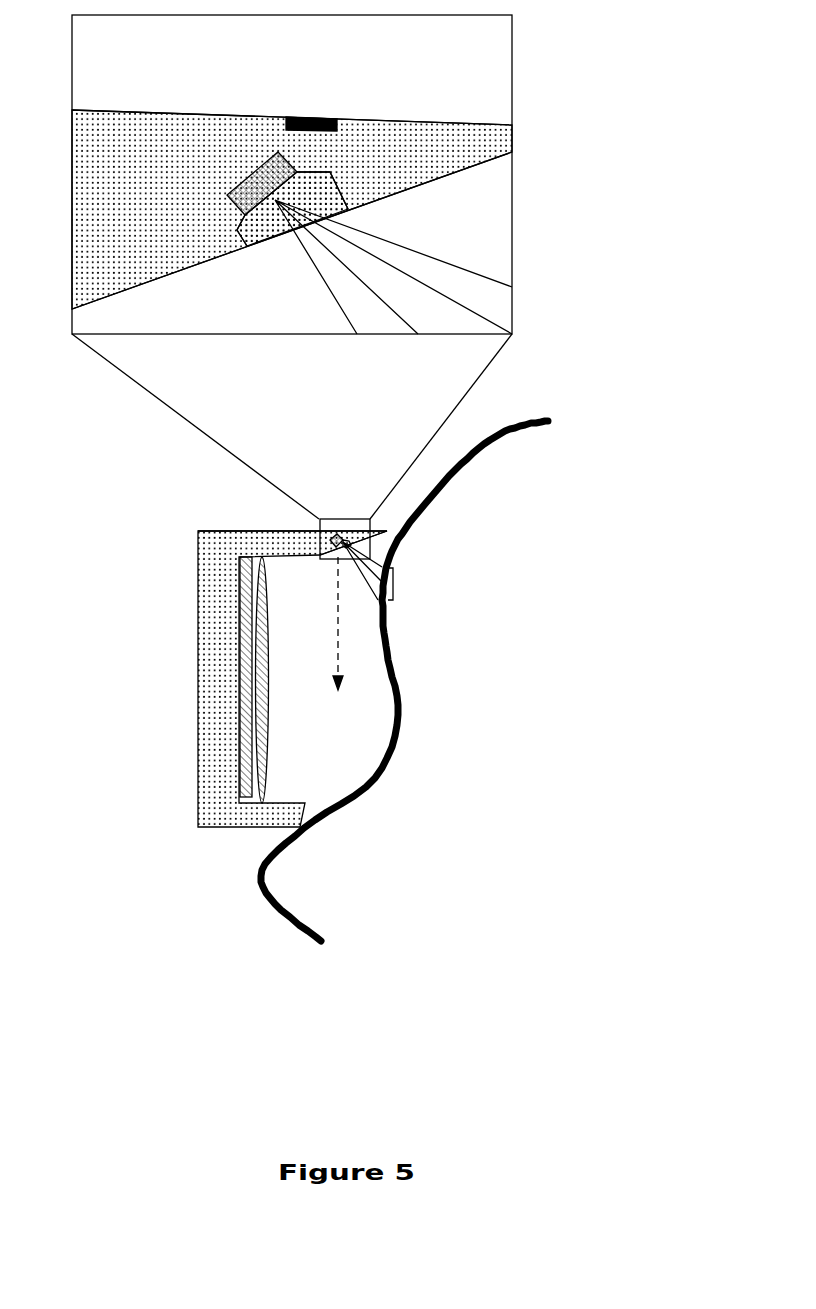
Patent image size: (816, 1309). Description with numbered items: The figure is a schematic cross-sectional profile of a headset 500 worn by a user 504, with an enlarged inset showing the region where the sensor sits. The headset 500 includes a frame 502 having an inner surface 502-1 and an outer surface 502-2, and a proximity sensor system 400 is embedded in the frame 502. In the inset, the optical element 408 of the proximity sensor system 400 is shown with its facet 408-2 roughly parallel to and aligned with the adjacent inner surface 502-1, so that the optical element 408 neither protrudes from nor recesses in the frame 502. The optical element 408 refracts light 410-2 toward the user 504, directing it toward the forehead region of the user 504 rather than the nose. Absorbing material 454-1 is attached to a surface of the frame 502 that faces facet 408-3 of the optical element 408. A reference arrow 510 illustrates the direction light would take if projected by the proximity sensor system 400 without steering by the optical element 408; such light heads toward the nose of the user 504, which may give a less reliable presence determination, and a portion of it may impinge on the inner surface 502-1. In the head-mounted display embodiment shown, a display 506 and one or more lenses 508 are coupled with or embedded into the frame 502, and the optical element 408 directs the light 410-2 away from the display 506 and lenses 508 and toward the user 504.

The headset 500 is at (155, 540).
The frame 502 is at (122, 90).
The inner surface 502-1 is at (473, 172).
The outer surface 502-2 is at (244, 116).
The user 504 is at (400, 531).
The display 506 is at (240, 803).
The lenses 508 is at (268, 732).
The reference arrow 510 is at (337, 652).
The proximity sensor system 400 is at (228, 174).
The optical element 408 is at (250, 241).
The facet 408-2 is at (285, 230).
The facet 408-3 is at (324, 173).
The light 410-2 is at (341, 303).
The absorbing material 454-1 is at (306, 117).